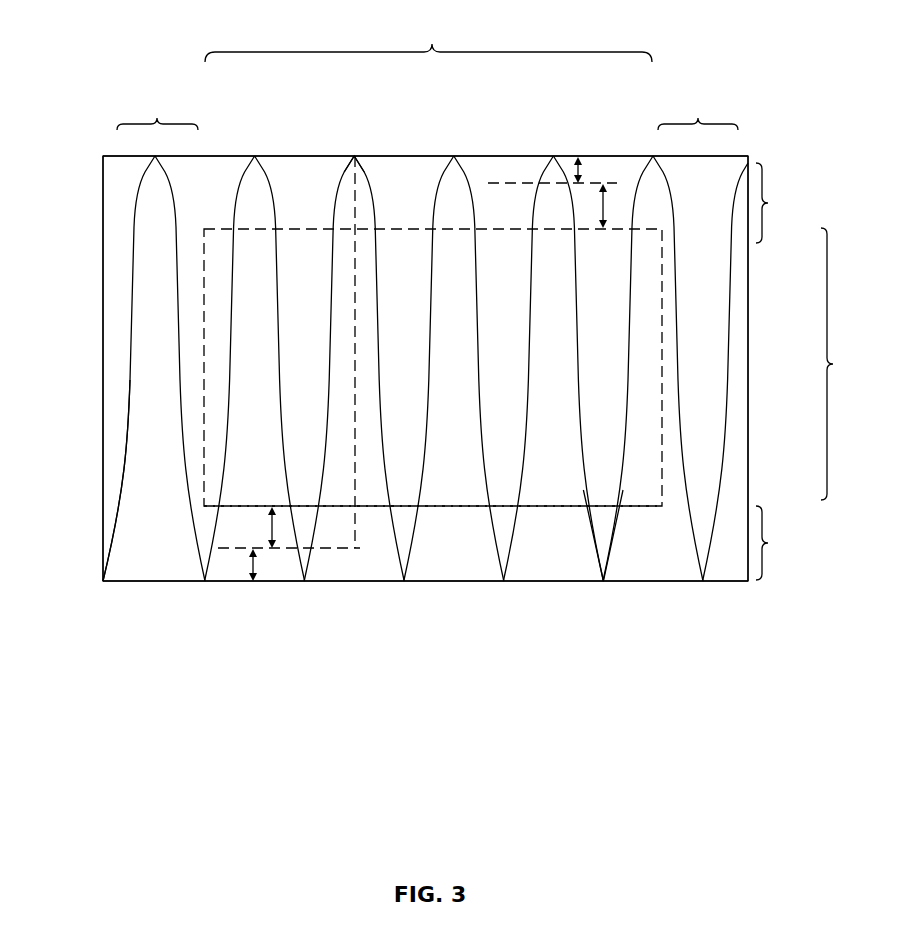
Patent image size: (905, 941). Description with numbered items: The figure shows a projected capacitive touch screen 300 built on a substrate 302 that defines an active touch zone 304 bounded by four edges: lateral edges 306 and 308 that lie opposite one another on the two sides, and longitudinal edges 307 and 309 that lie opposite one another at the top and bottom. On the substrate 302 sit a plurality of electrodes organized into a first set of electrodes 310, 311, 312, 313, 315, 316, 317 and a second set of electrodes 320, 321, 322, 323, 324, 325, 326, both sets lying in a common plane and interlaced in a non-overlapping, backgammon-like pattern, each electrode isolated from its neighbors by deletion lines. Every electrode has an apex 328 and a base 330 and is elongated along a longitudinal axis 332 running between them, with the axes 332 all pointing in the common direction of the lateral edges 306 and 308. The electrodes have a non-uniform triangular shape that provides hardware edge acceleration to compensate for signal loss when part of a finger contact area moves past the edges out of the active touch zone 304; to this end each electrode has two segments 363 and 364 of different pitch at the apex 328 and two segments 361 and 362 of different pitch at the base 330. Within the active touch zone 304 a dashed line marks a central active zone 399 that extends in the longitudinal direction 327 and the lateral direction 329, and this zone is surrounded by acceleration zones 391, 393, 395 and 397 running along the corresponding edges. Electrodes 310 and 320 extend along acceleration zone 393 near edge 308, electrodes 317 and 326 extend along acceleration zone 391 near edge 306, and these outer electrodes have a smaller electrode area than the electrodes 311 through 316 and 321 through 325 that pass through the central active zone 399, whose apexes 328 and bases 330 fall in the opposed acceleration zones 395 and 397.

The projected capacitive touch screen 300 is at (780, 165).
The substrate 302 is at (643, 555).
The active touch zone 304 is at (467, 461).
The lateral edge 306 is at (750, 283).
The longitudinal edge 307 is at (505, 152).
The lateral edge 308 is at (102, 252).
The longitudinal edge 309 is at (690, 583).
The electrode 310 is at (115, 358).
The electrode 311 is at (203, 408).
The electrode 312 is at (298, 187).
The electrode 313 is at (408, 330).
The electrode 315 is at (499, 356).
The electrode 316 is at (603, 361).
The electrode 317 is at (695, 405).
The electrode 320 is at (148, 540).
The electrode 321 is at (247, 472).
The electrode 322 is at (337, 487).
The electrode 323 is at (452, 397).
The electrode 324 is at (552, 422).
The electrode 325 is at (652, 422).
The electrode 326 is at (735, 373).
The longitudinal direction 327 is at (848, 364).
The apex 328 is at (373, 160).
The lateral direction 329 is at (428, 40).
The base 330 is at (405, 528).
The longitudinal axis 332 is at (350, 268).
The segment 361 is at (250, 562).
The segment 362 is at (273, 530).
The segment 363 is at (583, 157).
The segment 364 is at (604, 205).
The acceleration zone 391 is at (698, 112).
The acceleration zone 393 is at (157, 112).
The acceleration zone 395 is at (782, 203).
The acceleration zone 397 is at (782, 543).
The central active zone 399 is at (468, 507).